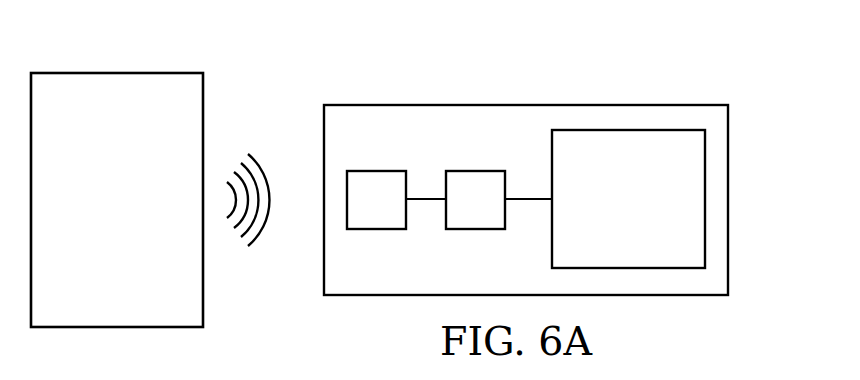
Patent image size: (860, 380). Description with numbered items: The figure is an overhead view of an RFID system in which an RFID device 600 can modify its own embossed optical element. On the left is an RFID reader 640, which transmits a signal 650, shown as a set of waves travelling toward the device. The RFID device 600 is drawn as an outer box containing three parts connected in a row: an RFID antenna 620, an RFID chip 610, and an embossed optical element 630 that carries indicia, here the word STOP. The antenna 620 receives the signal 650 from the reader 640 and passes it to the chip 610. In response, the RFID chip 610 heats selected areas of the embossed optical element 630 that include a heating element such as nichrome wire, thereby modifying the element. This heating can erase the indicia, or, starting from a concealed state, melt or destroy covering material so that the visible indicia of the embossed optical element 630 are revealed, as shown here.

The RFID device 600 is at (627, 95).
The RFID chip 610 is at (473, 171).
The RFID antenna 620 is at (375, 171).
The embossed optical element 630 is at (707, 200).
The RFID reader 640 is at (117, 72).
The signal 650 is at (261, 118).